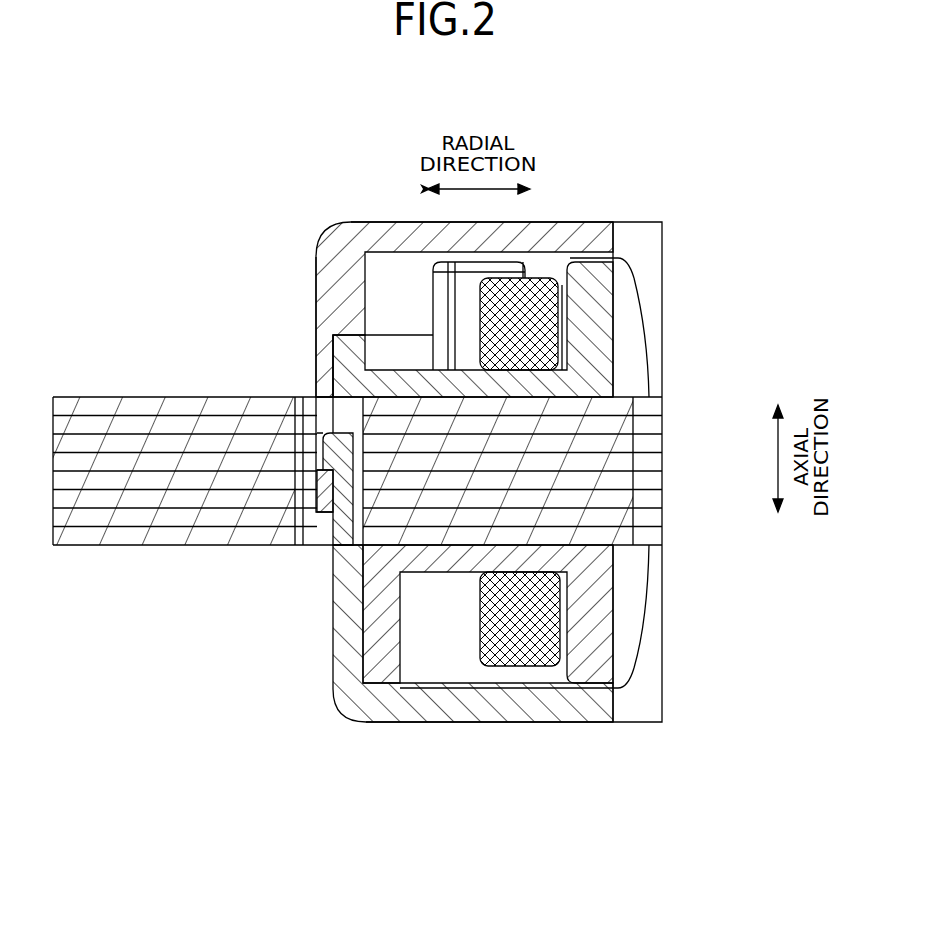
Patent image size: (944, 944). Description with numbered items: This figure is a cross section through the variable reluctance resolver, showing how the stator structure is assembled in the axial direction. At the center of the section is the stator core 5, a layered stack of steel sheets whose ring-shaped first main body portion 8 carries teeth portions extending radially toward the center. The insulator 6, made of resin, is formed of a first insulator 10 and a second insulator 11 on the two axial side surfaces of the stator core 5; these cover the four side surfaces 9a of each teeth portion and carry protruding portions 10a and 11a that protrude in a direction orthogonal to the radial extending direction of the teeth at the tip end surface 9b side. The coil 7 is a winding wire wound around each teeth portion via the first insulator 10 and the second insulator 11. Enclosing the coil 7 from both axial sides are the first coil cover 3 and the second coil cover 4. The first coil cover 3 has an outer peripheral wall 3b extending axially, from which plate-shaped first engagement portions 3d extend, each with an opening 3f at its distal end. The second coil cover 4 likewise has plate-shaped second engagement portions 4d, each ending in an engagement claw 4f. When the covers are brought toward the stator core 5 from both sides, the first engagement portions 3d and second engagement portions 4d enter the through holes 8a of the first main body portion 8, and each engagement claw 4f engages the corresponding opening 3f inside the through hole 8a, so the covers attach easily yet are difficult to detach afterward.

The first coil cover 3 is at (387, 219).
The outer peripheral wall 3b is at (340, 290).
The first engagement portion 3d is at (326, 360).
The opening 3f is at (325, 420).
The second coil cover 4 is at (403, 725).
The second engagement portion 4d is at (340, 518).
The engagement claw 4f is at (327, 457).
The stator core 5 is at (133, 394).
The insulator 6 is at (710, 284).
The coil 7 is at (540, 276).
The first main body portion 8 is at (215, 397).
The through hole 8a is at (337, 562).
The side surface 9a is at (596, 392).
The tip end surface 9b is at (635, 461).
The first insulator 10 is at (650, 322).
The protruding portion 10a is at (590, 257).
The second insulator 11 is at (650, 626).
The protruding portion 11a is at (588, 688).